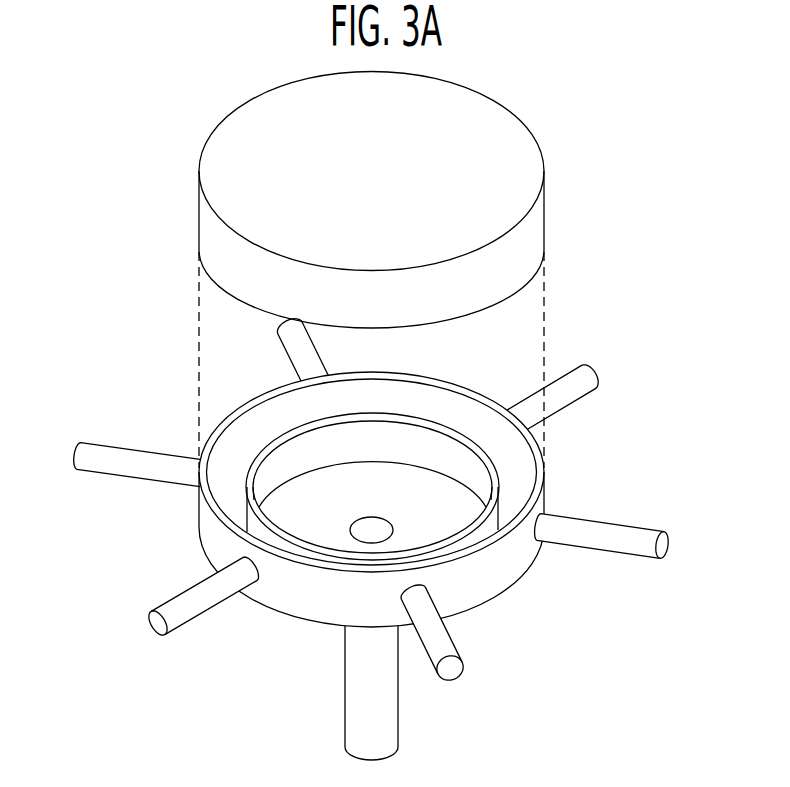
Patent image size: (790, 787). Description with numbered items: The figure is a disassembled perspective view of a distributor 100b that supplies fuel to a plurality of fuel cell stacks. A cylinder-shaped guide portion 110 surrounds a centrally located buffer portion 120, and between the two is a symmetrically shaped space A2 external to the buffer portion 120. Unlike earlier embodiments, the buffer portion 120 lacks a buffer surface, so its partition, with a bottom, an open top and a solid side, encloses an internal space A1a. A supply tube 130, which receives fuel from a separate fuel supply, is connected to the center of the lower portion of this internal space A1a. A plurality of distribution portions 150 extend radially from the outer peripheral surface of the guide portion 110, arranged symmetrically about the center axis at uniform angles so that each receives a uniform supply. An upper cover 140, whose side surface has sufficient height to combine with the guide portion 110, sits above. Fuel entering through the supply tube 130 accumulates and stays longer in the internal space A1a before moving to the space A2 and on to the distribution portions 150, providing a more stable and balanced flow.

The distributor 100b is at (104, 150).
The guide portion 110 is at (348, 499).
The buffer portion 120 is at (367, 486).
The supply tube 130 is at (392, 723).
The upper cover 140 is at (543, 211).
The distribution portions 150 is at (637, 535).
The internal space A1a is at (426, 461).
The space A2 is at (238, 463).